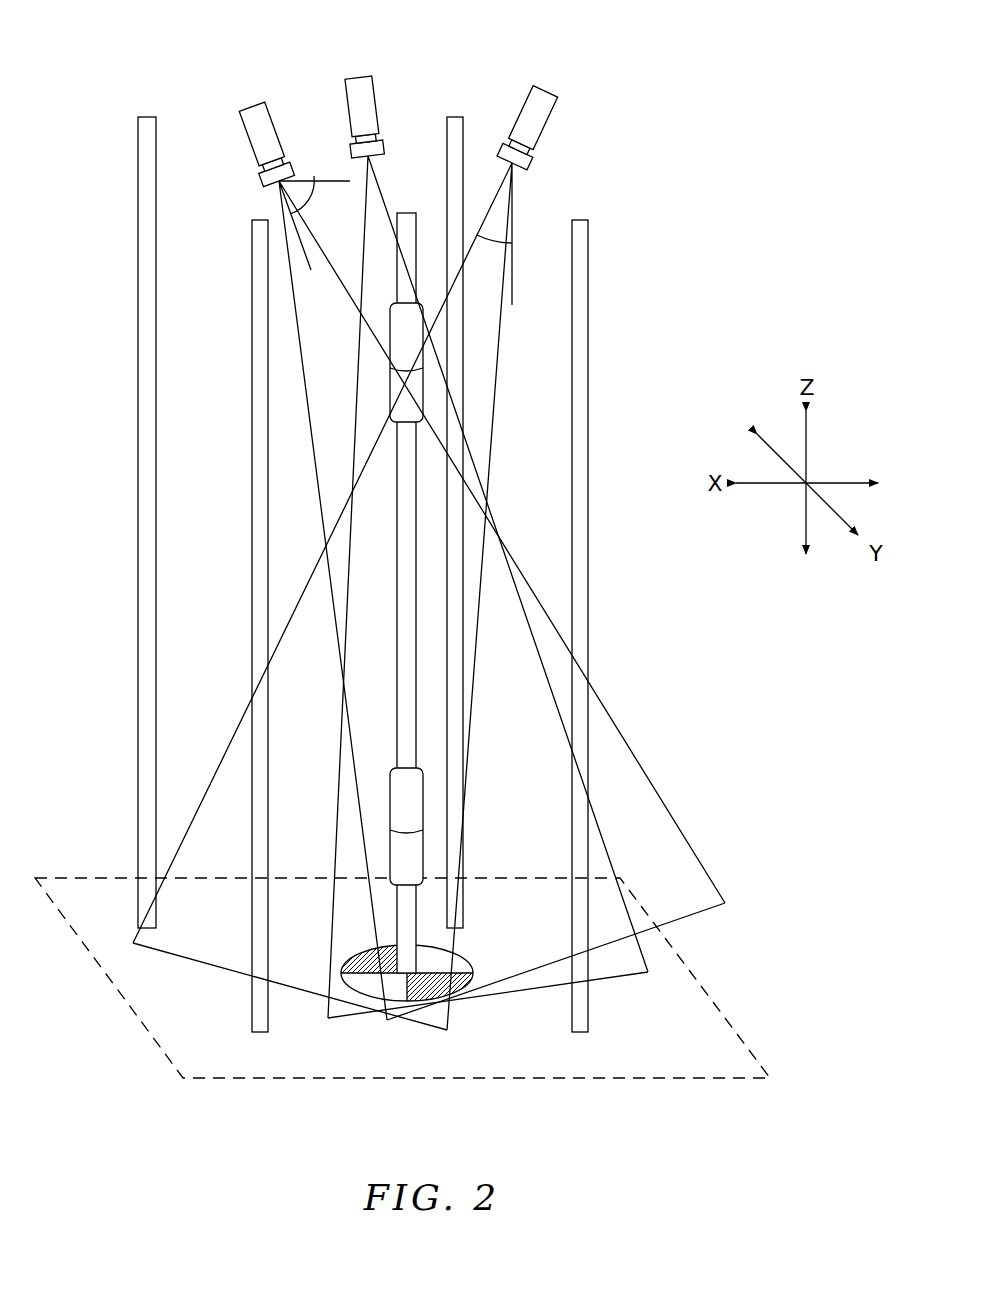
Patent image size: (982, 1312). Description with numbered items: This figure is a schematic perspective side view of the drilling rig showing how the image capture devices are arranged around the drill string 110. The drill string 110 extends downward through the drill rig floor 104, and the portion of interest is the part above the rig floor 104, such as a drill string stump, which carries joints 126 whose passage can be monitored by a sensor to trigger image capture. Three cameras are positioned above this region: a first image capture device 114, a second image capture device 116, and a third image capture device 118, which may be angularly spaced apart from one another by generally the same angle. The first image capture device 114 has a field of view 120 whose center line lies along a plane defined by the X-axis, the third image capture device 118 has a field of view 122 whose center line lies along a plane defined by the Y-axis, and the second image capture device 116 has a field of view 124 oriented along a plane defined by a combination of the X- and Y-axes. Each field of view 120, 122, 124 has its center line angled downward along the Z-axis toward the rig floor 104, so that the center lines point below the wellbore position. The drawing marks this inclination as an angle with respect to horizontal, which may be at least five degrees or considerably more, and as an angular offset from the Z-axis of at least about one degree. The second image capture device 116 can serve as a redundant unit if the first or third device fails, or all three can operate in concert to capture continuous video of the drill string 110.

The drill rig floor 104 is at (132, 1012).
The drill string 110 is at (403, 212).
The first image capture device 114 is at (250, 101).
The second image capture device 116 is at (355, 75).
The third image capture device 118 is at (536, 89).
The field of view of the first image capture device 120 is at (330, 428).
The field of view of the third image capture device 122 is at (623, 967).
The field of view of the second image capture device 124 is at (483, 352).
The joint 126 is at (390, 340).